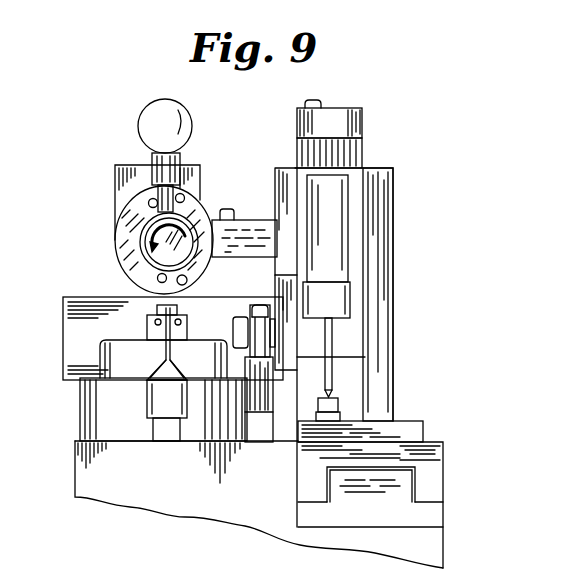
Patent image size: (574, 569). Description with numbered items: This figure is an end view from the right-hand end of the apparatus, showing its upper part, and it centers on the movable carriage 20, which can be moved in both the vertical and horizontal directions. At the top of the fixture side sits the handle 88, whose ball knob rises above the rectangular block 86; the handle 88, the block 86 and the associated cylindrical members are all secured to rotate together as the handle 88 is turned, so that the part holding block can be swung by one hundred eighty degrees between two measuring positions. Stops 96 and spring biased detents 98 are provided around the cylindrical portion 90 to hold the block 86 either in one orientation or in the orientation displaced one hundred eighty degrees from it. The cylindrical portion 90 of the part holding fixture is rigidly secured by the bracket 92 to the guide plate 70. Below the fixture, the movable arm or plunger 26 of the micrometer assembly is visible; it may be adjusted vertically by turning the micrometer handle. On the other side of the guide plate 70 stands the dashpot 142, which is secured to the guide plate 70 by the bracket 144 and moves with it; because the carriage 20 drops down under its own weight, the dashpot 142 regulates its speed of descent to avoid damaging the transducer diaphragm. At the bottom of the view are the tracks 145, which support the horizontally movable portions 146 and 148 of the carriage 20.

The movable carriage 20 is at (388, 142).
The movable arm or plunger 26 is at (167, 334).
The guide plate 70 is at (285, 288).
The rectangular block 86 is at (125, 174).
The handle 88 is at (152, 118).
The cylindrical portion 90 is at (122, 246).
The bracket 92 is at (257, 225).
The stops 96 is at (184, 278).
The spring biased detents 98 is at (148, 203).
The dashpot 142 is at (332, 200).
The bracket 144 is at (287, 180).
The tracks 145 is at (415, 477).
The horizontally movable portion 146 is at (410, 428).
The horizontally movable portion 148 is at (375, 290).